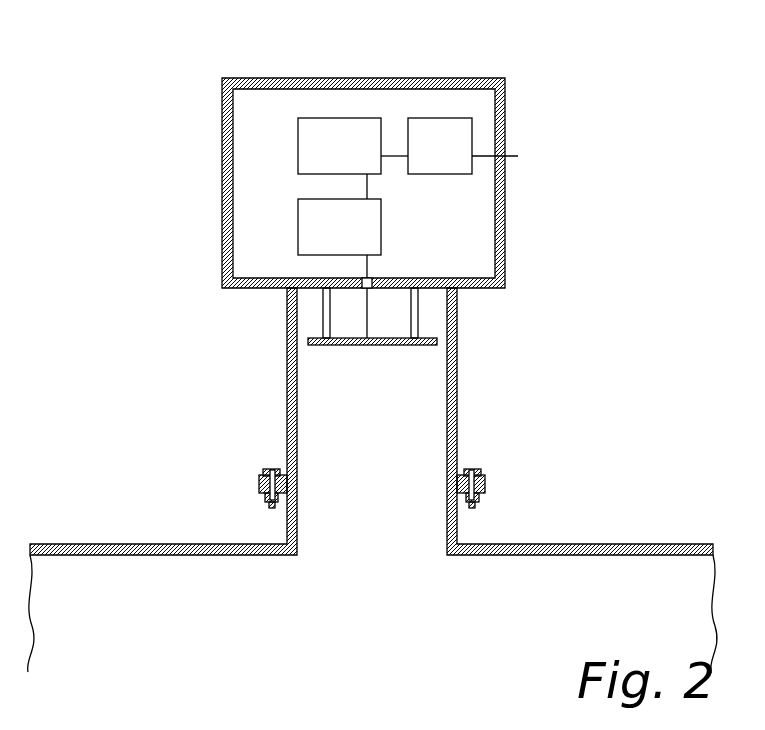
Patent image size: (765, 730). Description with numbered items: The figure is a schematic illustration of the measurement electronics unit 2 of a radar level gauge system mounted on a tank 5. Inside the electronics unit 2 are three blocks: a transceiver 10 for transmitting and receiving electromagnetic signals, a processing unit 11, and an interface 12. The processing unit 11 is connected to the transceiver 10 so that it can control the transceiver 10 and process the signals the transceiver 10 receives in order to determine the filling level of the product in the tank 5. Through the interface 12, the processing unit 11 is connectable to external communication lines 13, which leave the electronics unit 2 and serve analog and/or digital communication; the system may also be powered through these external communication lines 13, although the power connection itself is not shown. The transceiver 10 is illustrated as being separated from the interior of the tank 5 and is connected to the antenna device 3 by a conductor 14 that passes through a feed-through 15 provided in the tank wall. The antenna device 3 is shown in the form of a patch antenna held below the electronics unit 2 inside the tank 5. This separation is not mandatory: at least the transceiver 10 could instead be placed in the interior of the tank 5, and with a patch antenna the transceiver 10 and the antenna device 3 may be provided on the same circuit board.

The electronics unit 2 is at (283, 78).
The antenna device 3 is at (306, 340).
The tank 5 is at (597, 544).
The transceiver 10 is at (381, 225).
The processing unit 11 is at (298, 150).
The interface 12 is at (442, 118).
The external communication lines 13 is at (518, 156).
The conductor 14 is at (367, 313).
The feed-through 15 is at (378, 271).